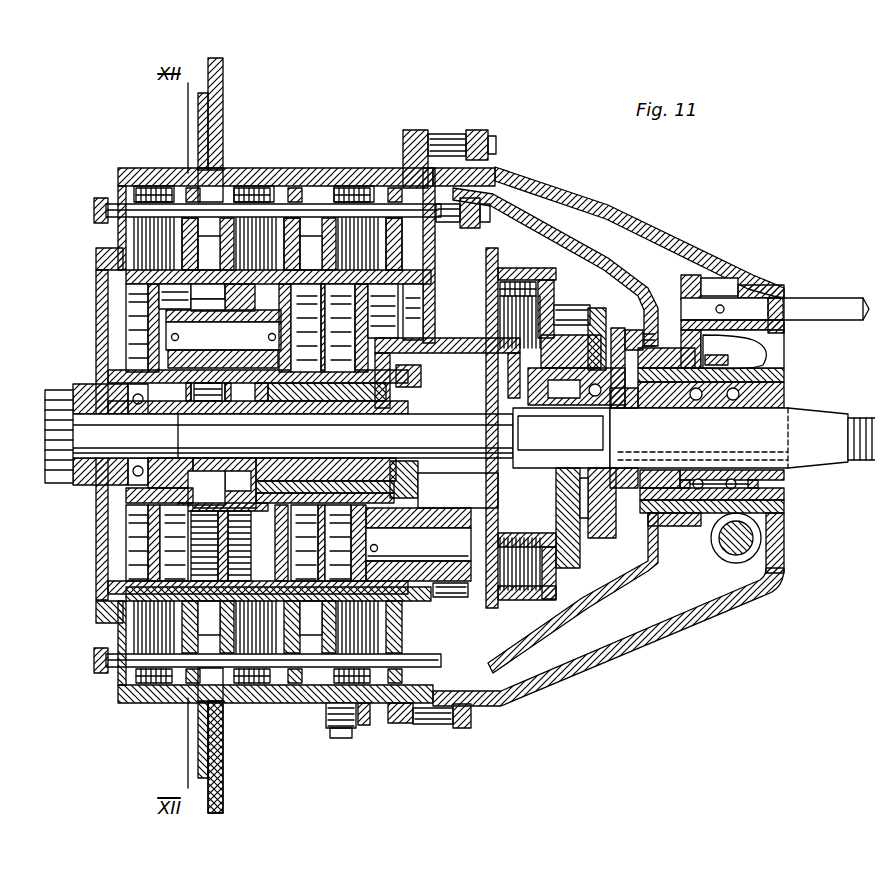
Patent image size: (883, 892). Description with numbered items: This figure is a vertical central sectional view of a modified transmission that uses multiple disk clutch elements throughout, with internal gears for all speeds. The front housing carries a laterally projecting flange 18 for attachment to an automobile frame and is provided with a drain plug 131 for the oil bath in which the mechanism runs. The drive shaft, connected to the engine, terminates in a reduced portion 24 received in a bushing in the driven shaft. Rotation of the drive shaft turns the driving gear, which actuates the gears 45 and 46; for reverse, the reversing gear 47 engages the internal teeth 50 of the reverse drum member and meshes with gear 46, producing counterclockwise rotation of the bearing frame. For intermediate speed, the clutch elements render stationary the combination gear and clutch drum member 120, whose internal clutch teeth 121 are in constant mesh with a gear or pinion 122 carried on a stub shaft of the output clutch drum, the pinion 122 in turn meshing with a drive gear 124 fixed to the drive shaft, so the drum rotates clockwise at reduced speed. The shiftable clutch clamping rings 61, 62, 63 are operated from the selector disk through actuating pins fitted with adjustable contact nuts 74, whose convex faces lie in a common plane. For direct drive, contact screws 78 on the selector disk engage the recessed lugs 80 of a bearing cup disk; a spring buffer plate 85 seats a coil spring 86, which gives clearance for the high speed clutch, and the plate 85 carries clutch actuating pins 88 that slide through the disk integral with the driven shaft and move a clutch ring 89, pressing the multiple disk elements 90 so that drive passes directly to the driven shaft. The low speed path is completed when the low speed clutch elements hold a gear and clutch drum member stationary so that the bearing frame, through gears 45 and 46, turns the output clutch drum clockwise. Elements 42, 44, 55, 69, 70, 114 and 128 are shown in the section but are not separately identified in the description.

The laterally projecting flange 18 is at (216, 772).
The reduced portion 24 is at (561, 438).
The gear carrier 42 is at (158, 330).
The gear 44 is at (265, 328).
The gear 45 is at (291, 436).
The gear 46 is at (202, 306).
The reversing gear 47 is at (164, 406).
The internal teeth 50 is at (175, 532).
The gear 55 is at (316, 588).
The clutch clamping ring 61 is at (371, 220).
The clutch clamping ring 62 is at (178, 228).
The clutch clamping ring 63 is at (298, 220).
The plate boss 69 is at (208, 185).
The tie bolt 70 is at (92, 202).
The contact nuts 74 is at (472, 194).
The contact screws 78 is at (630, 330).
The recessed lugs 80 is at (648, 556).
The spring buffer plate 85 is at (602, 576).
The coil spring 86 is at (546, 584).
The clutch actuating pins 88 is at (570, 300).
The clutch ring 89 is at (560, 300).
The multiple disk elements 90 is at (515, 276).
The lever 114 is at (800, 300).
The combination gear and clutch drum member 120 is at (415, 277).
The internal clutch teeth 121 is at (410, 296).
The gear or pinion 122 is at (428, 580).
The drive gear 124 is at (413, 362).
The hub 128 is at (412, 519).
The drain plug 131 is at (332, 732).